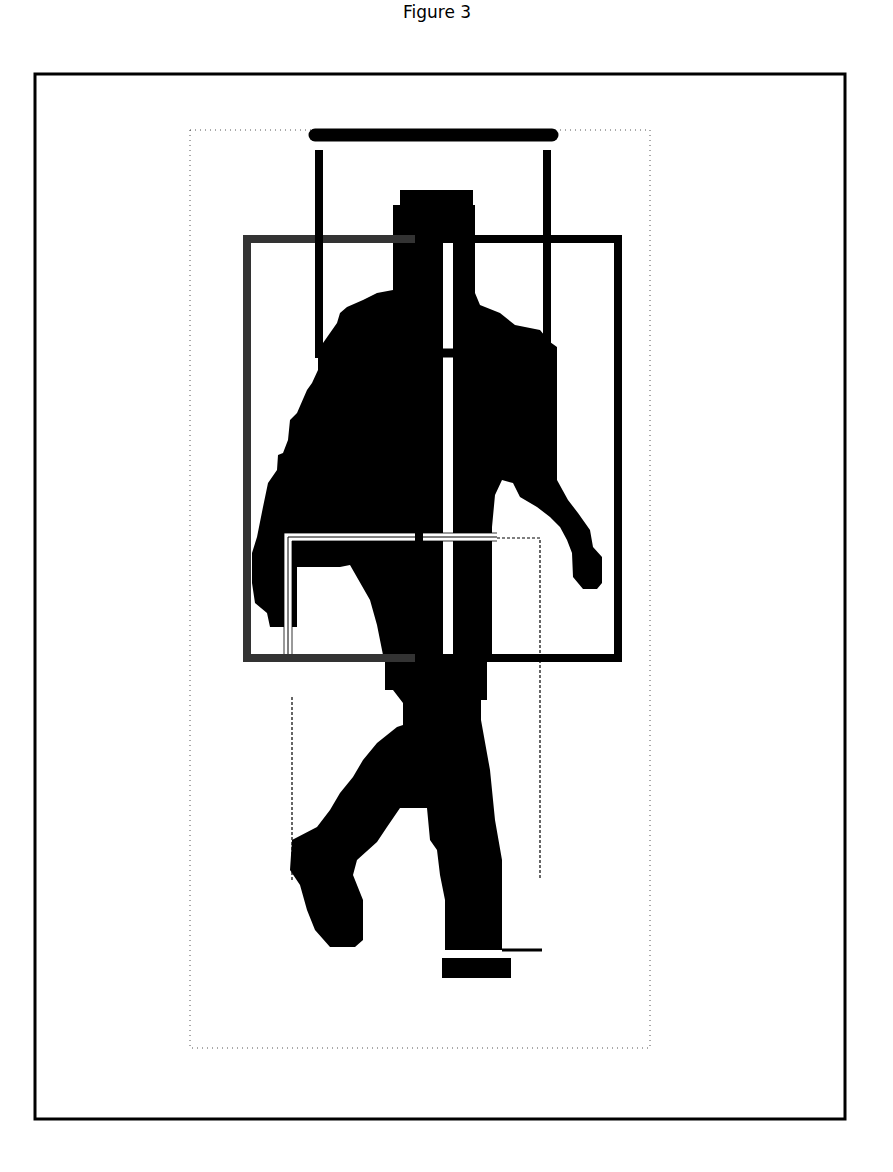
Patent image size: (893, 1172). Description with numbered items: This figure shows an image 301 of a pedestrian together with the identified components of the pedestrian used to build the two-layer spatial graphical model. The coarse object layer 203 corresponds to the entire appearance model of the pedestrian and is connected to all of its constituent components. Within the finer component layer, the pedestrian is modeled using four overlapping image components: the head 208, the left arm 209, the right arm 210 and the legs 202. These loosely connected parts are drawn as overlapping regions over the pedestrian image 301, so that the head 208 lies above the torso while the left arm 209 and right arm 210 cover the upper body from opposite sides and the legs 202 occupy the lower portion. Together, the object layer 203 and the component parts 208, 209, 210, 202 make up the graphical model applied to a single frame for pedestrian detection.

The image of the pedestrian 301 is at (752, 73).
The object layer 203 is at (188, 190).
The legs component 202 is at (280, 739).
The head component 208 is at (317, 127).
The left arm component 209 is at (622, 432).
The right arm component 210 is at (245, 333).